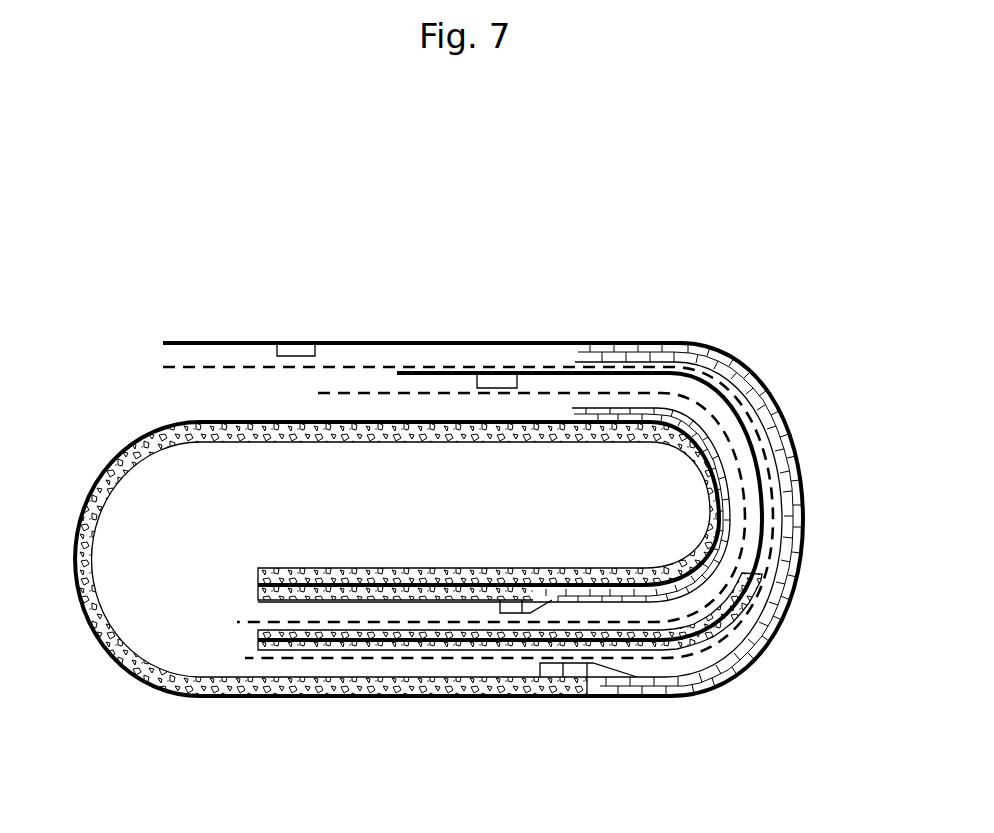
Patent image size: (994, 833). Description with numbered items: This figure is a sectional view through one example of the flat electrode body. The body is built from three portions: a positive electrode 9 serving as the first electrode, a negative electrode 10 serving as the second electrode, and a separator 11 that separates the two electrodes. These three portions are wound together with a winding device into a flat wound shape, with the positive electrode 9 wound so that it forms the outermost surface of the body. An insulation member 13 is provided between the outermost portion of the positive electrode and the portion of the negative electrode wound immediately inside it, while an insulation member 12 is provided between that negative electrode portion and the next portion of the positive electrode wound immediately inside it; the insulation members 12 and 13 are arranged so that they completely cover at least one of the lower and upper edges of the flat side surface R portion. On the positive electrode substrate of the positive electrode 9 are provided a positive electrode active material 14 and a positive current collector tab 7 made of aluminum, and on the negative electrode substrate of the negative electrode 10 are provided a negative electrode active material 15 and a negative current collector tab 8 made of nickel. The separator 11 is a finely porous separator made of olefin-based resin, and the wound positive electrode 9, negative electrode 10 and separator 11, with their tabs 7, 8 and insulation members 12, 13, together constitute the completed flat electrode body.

The positive current collector tab 7 is at (299, 355).
The negative current collector tab 8 is at (502, 386).
The positive electrode 9 is at (176, 343).
The negative electrode 10 is at (428, 372).
The separator 11 is at (185, 368).
The insulation member 12 is at (702, 447).
The insulation member 13 is at (805, 527).
The positive electrode active material 14 is at (127, 673).
The negative electrode active material 15 is at (290, 650).